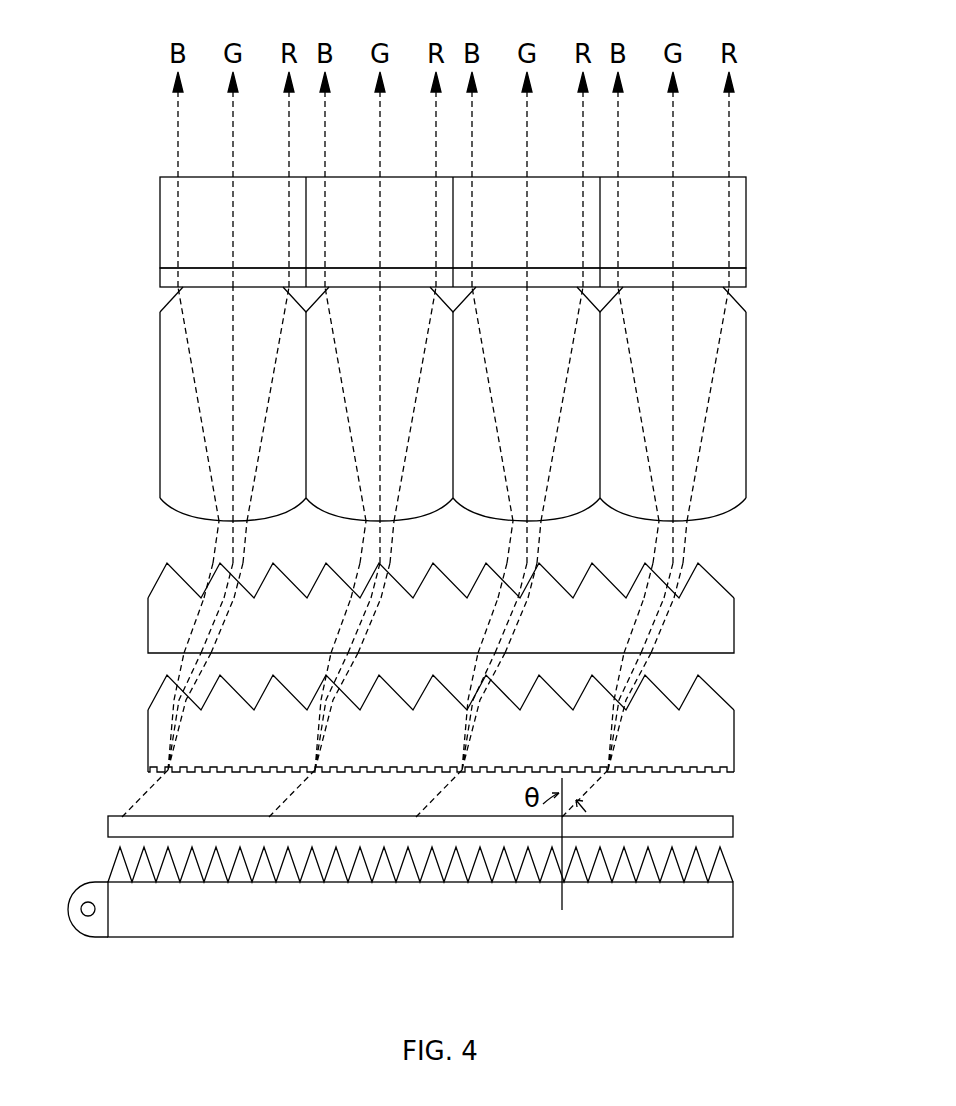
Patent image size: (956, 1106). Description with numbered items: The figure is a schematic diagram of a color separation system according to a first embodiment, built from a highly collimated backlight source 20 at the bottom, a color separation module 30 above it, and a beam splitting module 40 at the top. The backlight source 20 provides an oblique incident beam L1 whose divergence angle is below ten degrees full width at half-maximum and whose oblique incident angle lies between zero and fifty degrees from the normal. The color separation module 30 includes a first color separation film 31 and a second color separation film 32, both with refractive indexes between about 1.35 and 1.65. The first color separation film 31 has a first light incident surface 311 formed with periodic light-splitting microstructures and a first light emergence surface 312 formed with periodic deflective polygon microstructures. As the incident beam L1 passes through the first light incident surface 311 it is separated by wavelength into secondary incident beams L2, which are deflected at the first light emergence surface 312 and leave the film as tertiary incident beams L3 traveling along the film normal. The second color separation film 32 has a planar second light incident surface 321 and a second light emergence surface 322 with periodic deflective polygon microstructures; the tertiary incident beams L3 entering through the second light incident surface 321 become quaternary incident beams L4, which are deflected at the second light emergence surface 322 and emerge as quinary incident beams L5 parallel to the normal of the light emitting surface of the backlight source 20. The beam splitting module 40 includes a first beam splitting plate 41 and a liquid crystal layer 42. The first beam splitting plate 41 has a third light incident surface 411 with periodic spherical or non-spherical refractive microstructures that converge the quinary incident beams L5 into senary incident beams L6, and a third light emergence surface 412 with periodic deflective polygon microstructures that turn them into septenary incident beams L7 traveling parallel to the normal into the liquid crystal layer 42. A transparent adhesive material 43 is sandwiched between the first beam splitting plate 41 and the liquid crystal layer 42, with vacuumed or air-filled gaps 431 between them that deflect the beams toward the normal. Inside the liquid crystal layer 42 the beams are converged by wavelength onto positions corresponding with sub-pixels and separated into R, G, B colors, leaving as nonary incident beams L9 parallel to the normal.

The backlight source 20 is at (748, 815).
The color separation module 30 is at (459, 676).
The first color separation film 31 is at (434, 732).
The first light incident surface 311 is at (150, 771).
The first light emergence surface 312 is at (157, 692).
The second color separation film 32 is at (434, 619).
The second light incident surface 321 is at (150, 655).
The second light emergence surface 322 is at (157, 580).
The beam splitting module 40 is at (475, 352).
The first beam splitting plate 41 is at (452, 405).
The third light incident surface 411 is at (172, 510).
The third light emergence surface 412 is at (177, 293).
The liquid crystal layer 42 is at (746, 202).
The adhesive material 43 is at (746, 280).
The gap 431 is at (610, 303).
The incident beam L1 is at (592, 787).
The secondary incident beams L2 is at (627, 733).
The tertiary incident beams L3 is at (655, 665).
The quaternary incident beams L4 is at (675, 617).
The quinary incident beams L5 is at (688, 545).
The senary incident beams L6 is at (713, 378).
The septenary incident beams L7 is at (729, 235).
The nonary incident beams L9 is at (729, 135).